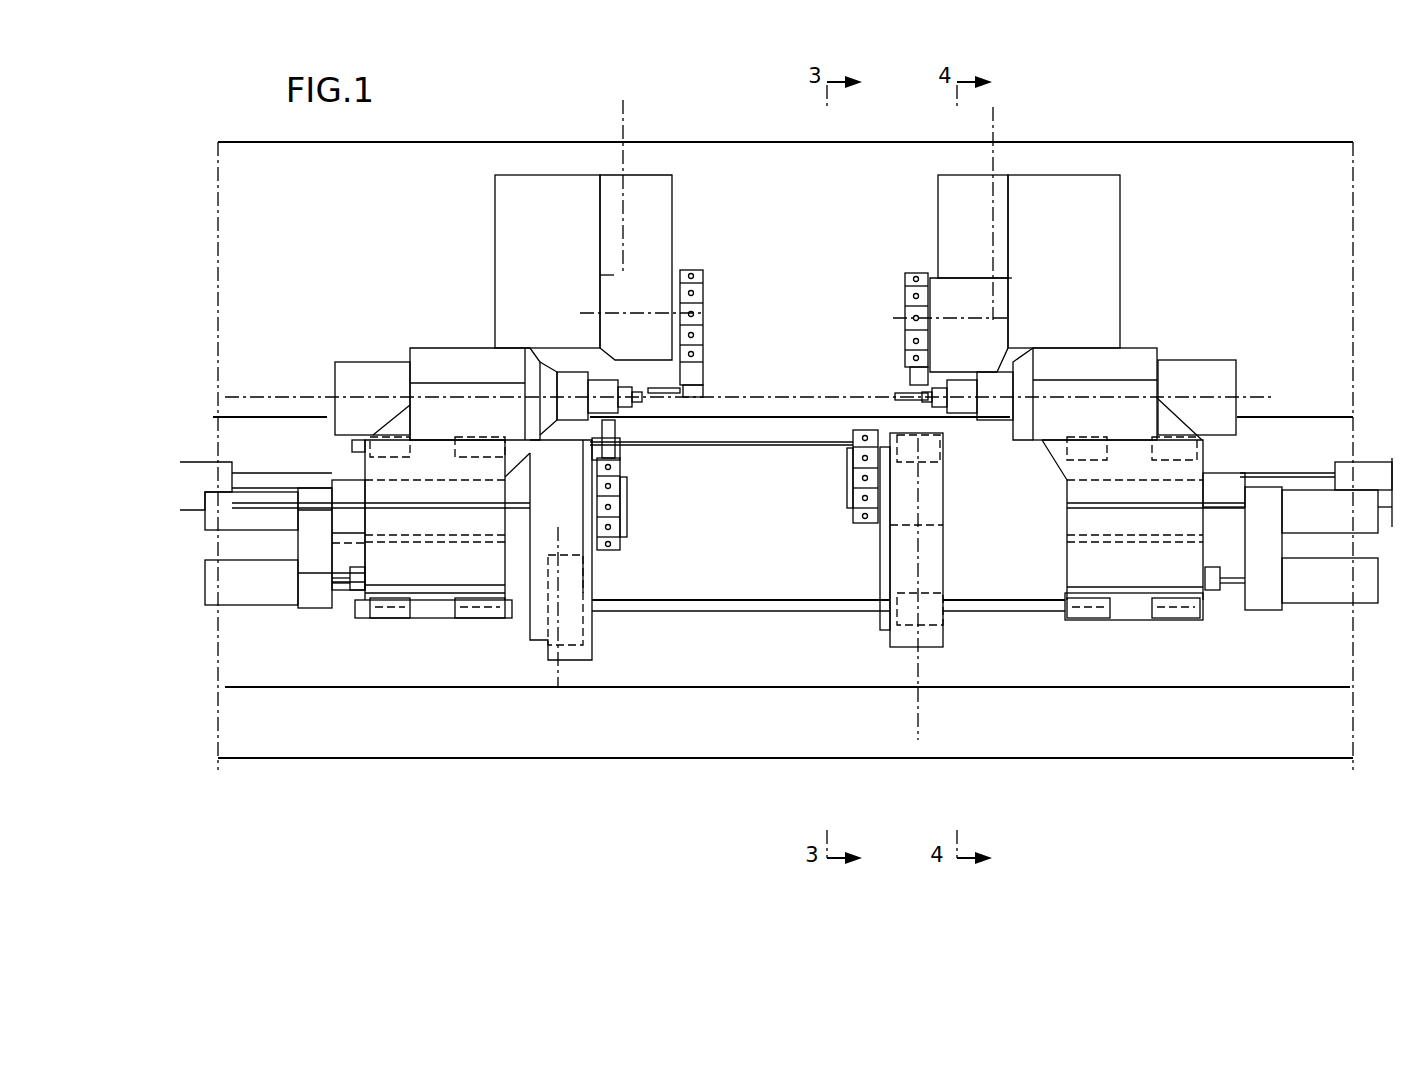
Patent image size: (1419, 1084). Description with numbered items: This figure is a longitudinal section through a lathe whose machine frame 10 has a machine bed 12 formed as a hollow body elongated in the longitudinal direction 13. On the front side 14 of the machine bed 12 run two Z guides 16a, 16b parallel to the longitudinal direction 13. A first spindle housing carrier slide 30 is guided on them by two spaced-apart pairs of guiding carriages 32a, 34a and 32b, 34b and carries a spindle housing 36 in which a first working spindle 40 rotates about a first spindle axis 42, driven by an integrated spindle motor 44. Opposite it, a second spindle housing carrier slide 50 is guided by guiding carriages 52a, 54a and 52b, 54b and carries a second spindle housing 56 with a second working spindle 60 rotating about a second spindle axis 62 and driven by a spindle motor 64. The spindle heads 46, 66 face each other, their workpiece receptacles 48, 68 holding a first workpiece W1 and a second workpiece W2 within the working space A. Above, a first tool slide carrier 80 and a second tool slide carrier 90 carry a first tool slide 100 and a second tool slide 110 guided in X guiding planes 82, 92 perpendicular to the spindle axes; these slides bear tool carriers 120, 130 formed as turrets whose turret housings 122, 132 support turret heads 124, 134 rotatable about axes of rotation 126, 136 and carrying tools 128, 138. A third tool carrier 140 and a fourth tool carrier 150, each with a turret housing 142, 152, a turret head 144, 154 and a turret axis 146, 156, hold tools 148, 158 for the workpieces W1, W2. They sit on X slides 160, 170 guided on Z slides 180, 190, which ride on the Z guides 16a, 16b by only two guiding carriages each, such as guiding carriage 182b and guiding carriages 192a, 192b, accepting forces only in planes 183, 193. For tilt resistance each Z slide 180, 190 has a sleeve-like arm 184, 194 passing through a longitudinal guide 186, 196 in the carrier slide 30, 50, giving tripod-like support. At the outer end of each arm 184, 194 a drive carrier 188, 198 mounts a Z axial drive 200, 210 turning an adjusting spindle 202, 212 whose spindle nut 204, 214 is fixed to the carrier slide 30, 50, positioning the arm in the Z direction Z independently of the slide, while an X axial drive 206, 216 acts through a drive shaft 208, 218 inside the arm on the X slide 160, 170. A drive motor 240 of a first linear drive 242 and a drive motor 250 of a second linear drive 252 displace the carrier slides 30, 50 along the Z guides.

The machine frame 10 is at (843, 755).
The machine bed 12 is at (758, 600).
The longitudinal direction 13 is at (760, 600).
The front side 14 is at (805, 595).
The Z guide 16a is at (820, 605).
The Z guide 16b is at (755, 447).
The first spindle housing carrier slide 30 is at (400, 568).
The guiding carriage 32a is at (468, 618).
The guiding carriage 32b is at (460, 438).
The guiding carriage 34a is at (410, 620).
The guiding carriage 34b is at (375, 438).
The spindle housing 36 is at (482, 355).
The first working spindle 40 is at (596, 380).
The first spindle axis 42 is at (345, 370).
The spindle motor 44 is at (525, 360).
The spindle head 46 is at (608, 385).
The workpiece receptacle 48 is at (625, 380).
The second spindle housing carrier slide 50 is at (1140, 582).
The guiding carriage 52a is at (1080, 618).
The guiding carriage 52b is at (1060, 445).
The guiding carriage 54a is at (1190, 606).
The guiding carriage 54b is at (1175, 430).
The second spindle housing 56 is at (1075, 356).
The second working spindle 60 is at (960, 376).
The second spindle axis 62 is at (1200, 398).
The spindle motor 64 is at (1165, 437).
The spindle head 66 is at (978, 385).
The workpiece receptacle 68 is at (905, 350).
The first tool slide carrier 80 is at (565, 195).
The X guiding plane 82 is at (620, 135).
The second tool slide carrier 90 is at (1048, 188).
The X guiding plane 92 is at (993, 122).
The first tool slide 100 is at (634, 190).
The second tool slide 110 is at (955, 168).
The first tool carrier 120 is at (705, 275).
The turret housing 122 is at (645, 290).
The turret head 124 is at (705, 290).
The axis of rotation 126 is at (705, 320).
The tools 128 is at (705, 385).
The second tool carrier 130 is at (978, 290).
The turret housing 132 is at (1005, 300).
The turret head 134 is at (912, 272).
The axis of rotation 136 is at (958, 318).
The tools 138 is at (905, 380).
The third tool carrier 140 is at (632, 488).
The turret housing 142 is at (520, 345).
The turret head 144 is at (624, 530).
The turret axis 146 is at (622, 508).
The tools 148 is at (620, 455).
The fourth tool carrier 150 is at (847, 470).
The turret housing 152 is at (880, 555).
The turret head 154 is at (847, 455).
The turret axis 156 is at (883, 505).
The tools 158 is at (853, 430).
The X slide 160 is at (598, 573).
The X slide 170 is at (880, 578).
The Z slide 180 is at (545, 662).
The guiding carriage 182b is at (595, 620).
The plane 183 is at (558, 690).
The arm 184 is at (318, 568).
The longitudinal guide 186 is at (388, 540).
The drive carrier 188 is at (312, 495).
The Z slide 190 is at (905, 650).
The guiding carriage 192a is at (938, 648).
The guiding carriage 192b is at (942, 540).
The plane 193 is at (920, 715).
The arm 194 is at (1012, 545).
The longitudinal guide 196 is at (1165, 600).
The drive carrier 198 is at (1262, 500).
The Z axial drive 200 is at (265, 590).
The adjusting spindle 202 is at (342, 592).
The spindle nut 204 is at (385, 600).
The X axial drive 206 is at (235, 555).
The drive shaft 208 is at (352, 452).
The Z axial drive 210 is at (1335, 580).
The adjusting spindle 212 is at (1225, 592).
The spindle nut 214 is at (1235, 592).
The X axial drive 216 is at (1310, 604).
The drive shaft 218 is at (1220, 505).
The drive motor 240 is at (225, 470).
The first linear drive 242 is at (245, 470).
The drive motor 250 is at (1348, 470).
The second linear drive 252 is at (1300, 470).
The working space A is at (750, 383).
The Z direction Z is at (748, 535).
The first workpiece W1 is at (656, 355).
The second workpiece W2 is at (895, 393).